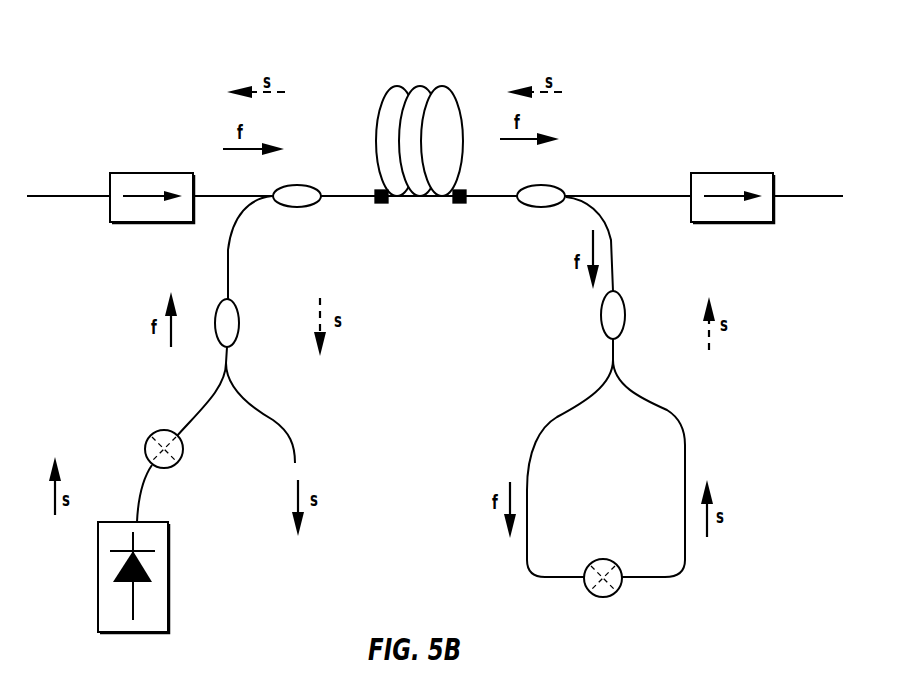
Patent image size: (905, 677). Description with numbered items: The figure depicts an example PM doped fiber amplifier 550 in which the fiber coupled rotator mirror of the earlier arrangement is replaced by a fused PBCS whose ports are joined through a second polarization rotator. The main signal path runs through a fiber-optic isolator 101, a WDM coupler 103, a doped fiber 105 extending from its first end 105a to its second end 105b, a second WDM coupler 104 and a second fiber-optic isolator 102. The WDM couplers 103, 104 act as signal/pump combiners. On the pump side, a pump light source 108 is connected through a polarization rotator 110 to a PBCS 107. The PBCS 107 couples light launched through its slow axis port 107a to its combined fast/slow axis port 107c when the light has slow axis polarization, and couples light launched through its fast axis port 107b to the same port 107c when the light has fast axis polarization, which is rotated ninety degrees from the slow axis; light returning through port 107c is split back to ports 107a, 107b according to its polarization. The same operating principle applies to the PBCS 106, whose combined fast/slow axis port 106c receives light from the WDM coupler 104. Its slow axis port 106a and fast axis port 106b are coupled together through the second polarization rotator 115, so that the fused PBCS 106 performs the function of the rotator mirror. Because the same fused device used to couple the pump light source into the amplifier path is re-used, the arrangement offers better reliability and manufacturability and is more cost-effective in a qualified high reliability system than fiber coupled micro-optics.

The fiber amplifier 550 is at (648, 88).
The fiber-optic isolator 101 is at (143, 223).
The fiber-optic isolator 102 is at (722, 223).
The WDM coupler 103 is at (297, 207).
The WDM coupler 104 is at (541, 207).
The doped fiber 105 is at (425, 197).
The first end of the doped fiber 105a is at (376, 190).
The second end of the doped fiber 105b is at (463, 190).
The polarization beam combiner/splitter 106 is at (601, 313).
The slow axis port of the PBCS 106a is at (668, 413).
The fast axis port of the PBCS 106b is at (559, 421).
The combined fast/slow axis port of the PBCS 106c is at (615, 282).
The polarization beam combiner/splitter 107 is at (216, 317).
The slow axis port of the PBCS 107a is at (275, 420).
The fast axis port of the PBCS 107b is at (189, 416).
The combined fast/slow axis port of the PBCS 107c is at (229, 266).
The pump light source 108 is at (141, 633).
The polarization rotator 110 is at (182, 452).
The second polarization rotator 115 is at (622, 589).